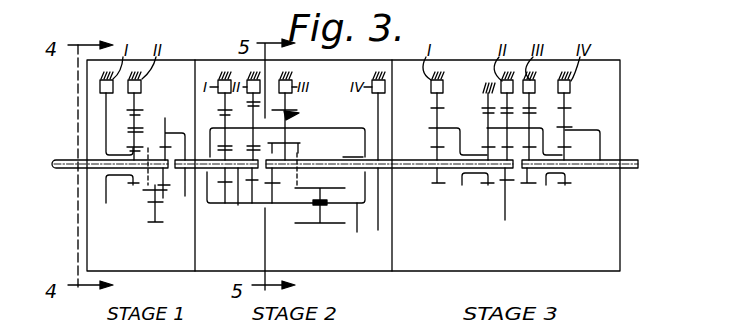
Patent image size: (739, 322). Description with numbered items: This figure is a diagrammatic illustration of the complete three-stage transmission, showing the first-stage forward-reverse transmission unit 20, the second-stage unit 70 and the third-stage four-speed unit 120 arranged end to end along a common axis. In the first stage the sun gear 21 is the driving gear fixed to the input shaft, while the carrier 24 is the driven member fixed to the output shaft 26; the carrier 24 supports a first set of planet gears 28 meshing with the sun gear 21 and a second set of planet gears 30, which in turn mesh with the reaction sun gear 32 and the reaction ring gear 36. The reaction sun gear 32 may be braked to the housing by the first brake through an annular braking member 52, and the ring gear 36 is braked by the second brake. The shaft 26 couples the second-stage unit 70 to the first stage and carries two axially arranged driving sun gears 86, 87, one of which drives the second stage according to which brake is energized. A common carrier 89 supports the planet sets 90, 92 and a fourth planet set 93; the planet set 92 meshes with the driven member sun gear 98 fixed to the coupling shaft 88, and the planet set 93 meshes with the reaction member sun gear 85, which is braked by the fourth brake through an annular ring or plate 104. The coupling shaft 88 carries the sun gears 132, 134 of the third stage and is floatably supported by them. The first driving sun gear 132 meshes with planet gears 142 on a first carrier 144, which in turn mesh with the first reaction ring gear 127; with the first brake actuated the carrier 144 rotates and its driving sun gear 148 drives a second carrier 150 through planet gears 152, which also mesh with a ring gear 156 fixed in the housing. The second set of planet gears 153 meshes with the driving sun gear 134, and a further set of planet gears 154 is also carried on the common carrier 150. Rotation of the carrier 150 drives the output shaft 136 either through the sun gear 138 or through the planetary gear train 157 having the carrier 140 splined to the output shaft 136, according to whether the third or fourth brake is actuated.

The forward-reverse transmission unit 20 is at (72, 209).
The sun gear 21 is at (165, 131).
The carrier 24 is at (185, 196).
The output shaft 26 is at (238, 205).
The first set of planet gears 28 is at (155, 223).
The second set of planet gears 30 is at (141, 117).
The reaction sun gear 32 is at (137, 189).
The reaction ring gear 36 is at (137, 100).
The annular braking member 52 is at (106, 115).
The stage 2 unit 70 is at (350, 277).
The reaction member sun gear 85 is at (347, 157).
The driving sun gear 86 is at (224, 205).
The driving sun gear 87 is at (252, 186).
The common carrier 89 is at (357, 232).
The planet set 90 is at (224, 118).
The planet set 92 is at (299, 113).
The fourth planet set 93 is at (320, 224).
The driven member sun gear 98 is at (272, 203).
The annular ring or plate 104 is at (377, 113).
The four-speed unit 120 is at (628, 232).
The first reaction ring gear 127 is at (432, 96).
The first driving sun gear 132 is at (445, 184).
The driving sun gear 134 is at (505, 220).
The output shaft 136 is at (632, 159).
The sun gear 138 is at (527, 184).
The carrier 140 is at (600, 128).
The planet gears 142 is at (433, 118).
The first carrier 144 is at (471, 124).
The driving sun gear 148 is at (491, 184).
The second carrier 150 is at (555, 126).
The first set of planet gears 152 is at (485, 114).
The second set of planet gears 153 is at (514, 117).
The set of planet gears 154 is at (542, 114).
The ring gear 156 is at (488, 83).
The planetary gear train 157 is at (565, 184).
The coupling shaft 88 is at (421, 156).